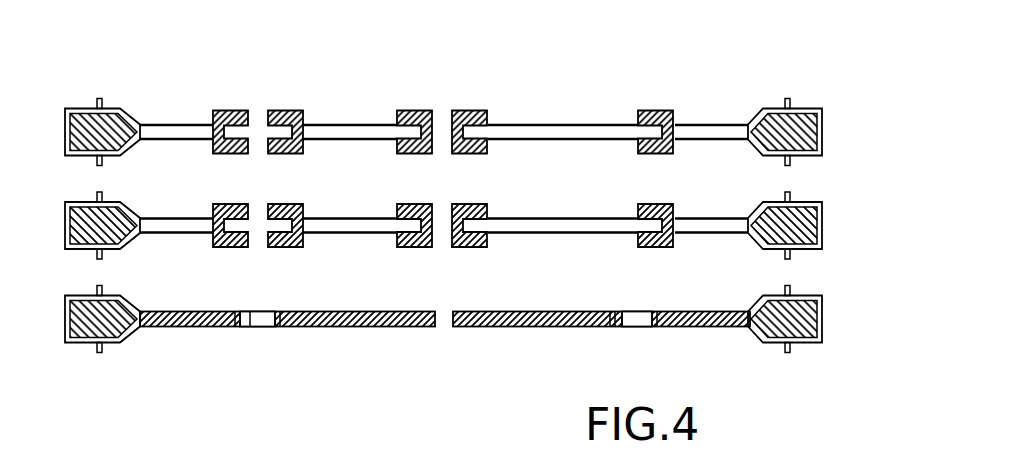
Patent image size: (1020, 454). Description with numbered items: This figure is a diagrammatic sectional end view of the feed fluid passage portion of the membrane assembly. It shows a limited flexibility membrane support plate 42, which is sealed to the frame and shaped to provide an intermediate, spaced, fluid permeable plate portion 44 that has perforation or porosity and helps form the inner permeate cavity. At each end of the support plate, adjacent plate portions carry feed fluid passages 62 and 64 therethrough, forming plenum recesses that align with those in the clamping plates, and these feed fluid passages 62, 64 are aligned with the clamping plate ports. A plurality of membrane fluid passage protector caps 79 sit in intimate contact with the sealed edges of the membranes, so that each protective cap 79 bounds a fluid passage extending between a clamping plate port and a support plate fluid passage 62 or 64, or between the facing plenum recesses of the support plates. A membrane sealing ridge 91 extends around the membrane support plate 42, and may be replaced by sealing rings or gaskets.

The membrane support plate 42 is at (502, 124).
The fluid permeable plate portion 44 is at (550, 120).
The feed fluid passage 62 is at (255, 110).
The feed fluid passage 64 is at (630, 108).
The membrane fluid passage protector cap 79 is at (600, 110).
The membrane sealing ridge 91 is at (823, 226).